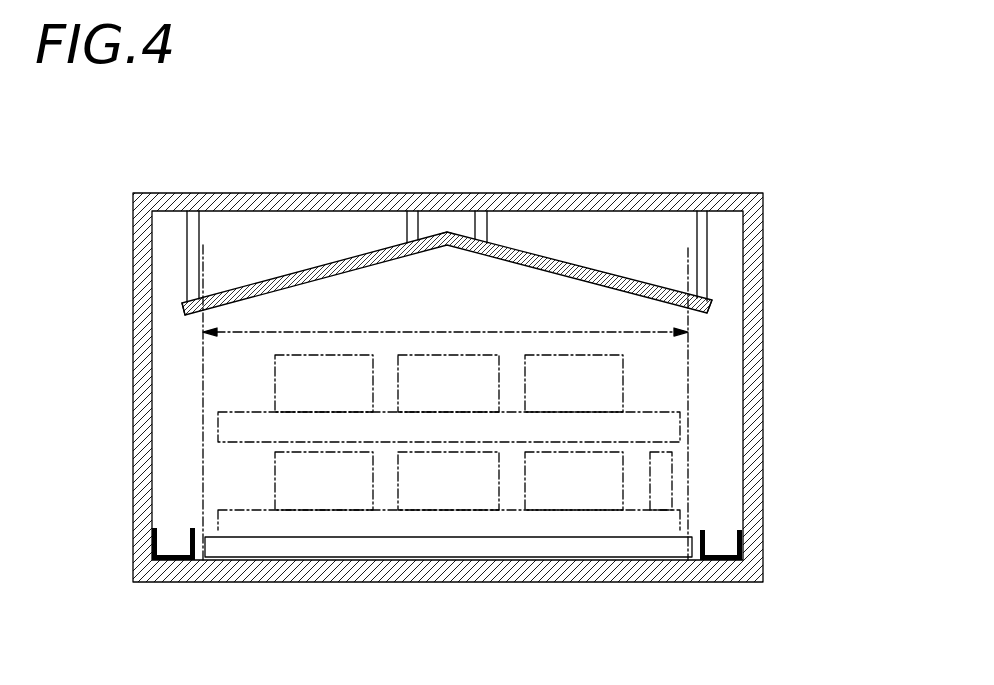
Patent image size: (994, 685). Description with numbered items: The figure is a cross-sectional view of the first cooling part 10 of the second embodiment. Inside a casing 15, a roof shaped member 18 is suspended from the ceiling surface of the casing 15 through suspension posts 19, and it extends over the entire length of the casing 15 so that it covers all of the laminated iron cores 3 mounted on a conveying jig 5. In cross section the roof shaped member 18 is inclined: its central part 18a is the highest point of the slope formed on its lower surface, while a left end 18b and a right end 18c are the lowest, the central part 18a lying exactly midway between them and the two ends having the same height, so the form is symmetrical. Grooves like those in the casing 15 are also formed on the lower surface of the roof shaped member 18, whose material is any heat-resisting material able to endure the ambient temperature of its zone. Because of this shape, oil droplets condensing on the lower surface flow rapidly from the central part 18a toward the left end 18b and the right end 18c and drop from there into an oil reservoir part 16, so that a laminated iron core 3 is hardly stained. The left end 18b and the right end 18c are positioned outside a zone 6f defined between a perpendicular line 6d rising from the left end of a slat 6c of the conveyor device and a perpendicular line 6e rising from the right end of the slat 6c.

The battery pack 10 is at (160, 168).
The casing 15 is at (133, 273).
The oil reservoir part 16 is at (168, 552).
The roof shaped member 18 is at (352, 262).
The central part 18a is at (447, 246).
The left end 18b is at (187, 310).
The right end 18c is at (703, 312).
The suspension posts 19 is at (193, 237).
The laminated iron core 3 is at (296, 393).
The conveying jig 5 is at (373, 412).
The slat 6c is at (615, 547).
The perpendicular line 6d is at (203, 388).
The perpendicular line 6e is at (688, 383).
The zone 6f is at (445, 317).